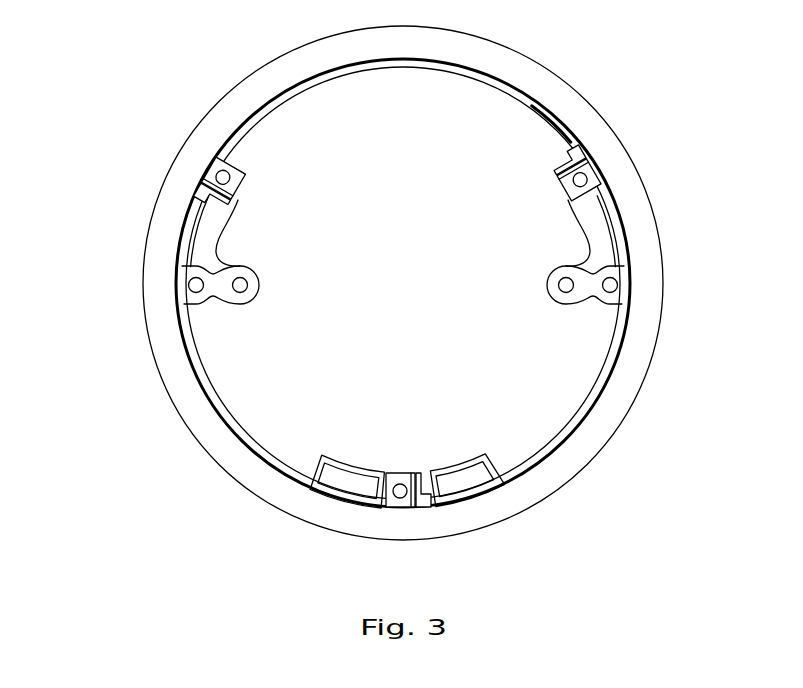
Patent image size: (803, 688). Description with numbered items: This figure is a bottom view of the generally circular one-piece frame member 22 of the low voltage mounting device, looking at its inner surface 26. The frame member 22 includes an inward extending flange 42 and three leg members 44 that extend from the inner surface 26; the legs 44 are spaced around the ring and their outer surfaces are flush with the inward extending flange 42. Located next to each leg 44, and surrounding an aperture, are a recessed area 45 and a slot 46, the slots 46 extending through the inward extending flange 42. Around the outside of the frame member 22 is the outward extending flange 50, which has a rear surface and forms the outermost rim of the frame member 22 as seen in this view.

The frame member 22 is at (122, 102).
The inner surface 26 is at (394, 60).
The inward extending flange 42 is at (277, 105).
The leg member 44 is at (557, 127).
The recessed area 45 is at (225, 202).
The slot 46 is at (598, 173).
The outward extending flange 50 is at (560, 82).